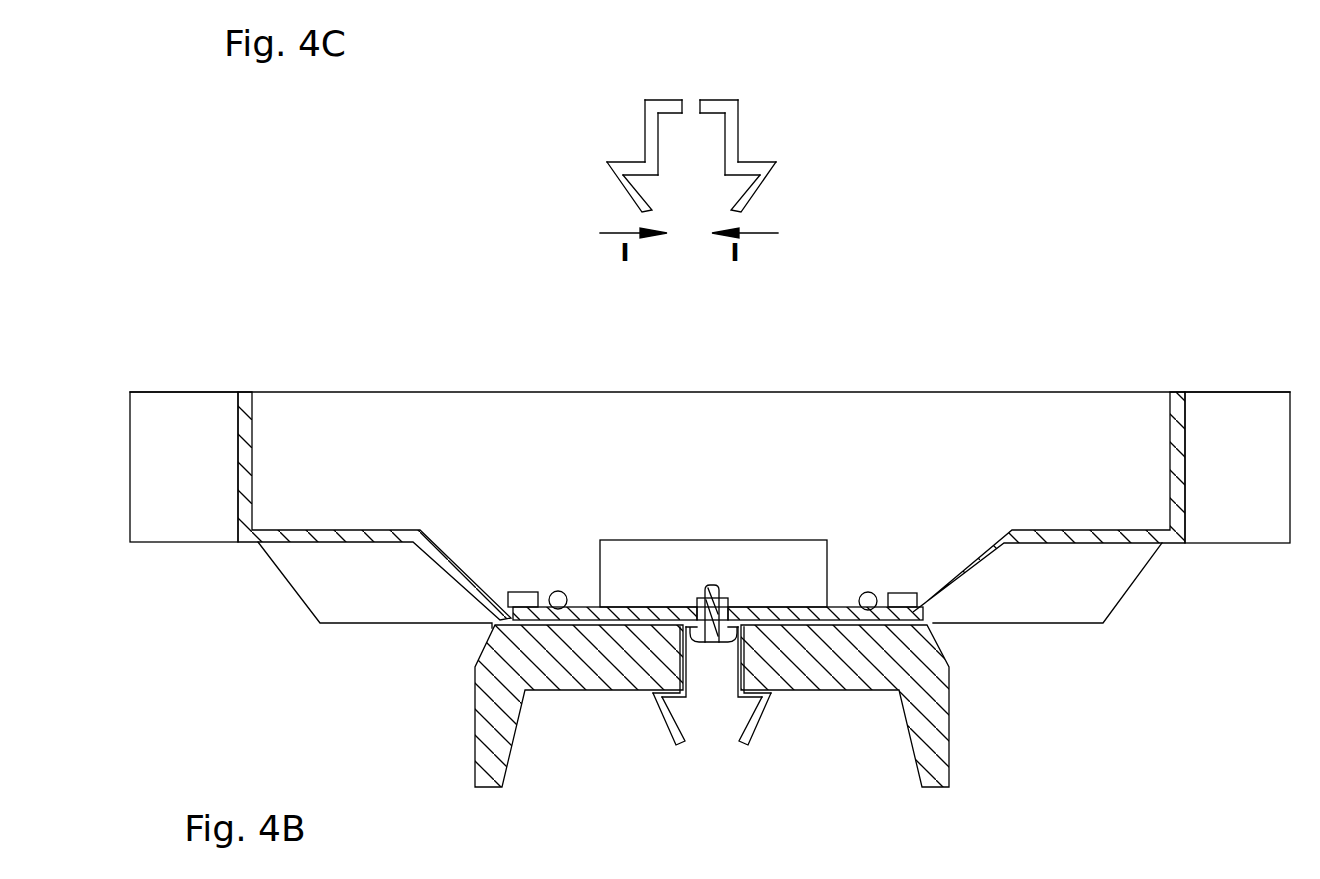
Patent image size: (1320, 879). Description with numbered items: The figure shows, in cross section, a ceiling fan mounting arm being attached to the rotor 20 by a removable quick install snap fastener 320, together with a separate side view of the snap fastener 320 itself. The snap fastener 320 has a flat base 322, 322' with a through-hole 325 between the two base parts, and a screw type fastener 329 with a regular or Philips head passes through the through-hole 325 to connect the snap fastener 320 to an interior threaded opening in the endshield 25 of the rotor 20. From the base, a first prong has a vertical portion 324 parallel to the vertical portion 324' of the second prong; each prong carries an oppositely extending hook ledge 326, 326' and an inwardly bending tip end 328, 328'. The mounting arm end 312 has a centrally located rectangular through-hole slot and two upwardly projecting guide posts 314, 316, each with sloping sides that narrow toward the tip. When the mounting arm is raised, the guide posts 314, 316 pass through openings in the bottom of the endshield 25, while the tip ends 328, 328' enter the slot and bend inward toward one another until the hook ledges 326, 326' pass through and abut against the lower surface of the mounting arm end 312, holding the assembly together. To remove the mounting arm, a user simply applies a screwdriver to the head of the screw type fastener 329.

In FIG. 4B, the rotor 20 is at (242, 413).
In FIG. 4B, the endshield 25 is at (455, 627).
In FIG. 4B, the mounting arm end 312 is at (588, 690).
In FIG. 4B, the guide post 314 is at (557, 596).
In FIG. 4B, the guide post 316 is at (869, 598).
In FIG. 4B, the screw type fastener 329 is at (718, 602).
In FIG. 4C, the snap fastener 320 is at (530, 101).
In FIG. 4C, the flat base 322 is at (620, 63).
In FIG. 4C, the flat base 322' is at (781, 78).
In FIG. 4C, the vertical portion 324 is at (554, 98).
In FIG. 4C, the vertical portion 324' is at (819, 136).
In FIG. 4C, the through-hole 325 is at (703, 100).
In FIG. 4C, the hook ledge 326 is at (542, 156).
In FIG. 4B, the hook ledge 326 is at (703, 678).
In FIG. 4C, the hook ledge 326' is at (816, 155).
In FIG. 4B, the hook ledge 326' is at (801, 683).
In FIG. 4C, the tip end 328 is at (568, 197).
In FIG. 4B, the tip end 328 is at (636, 780).
In FIG. 4C, the tip end 328' is at (829, 199).
In FIG. 4B, the tip end 328' is at (792, 780).